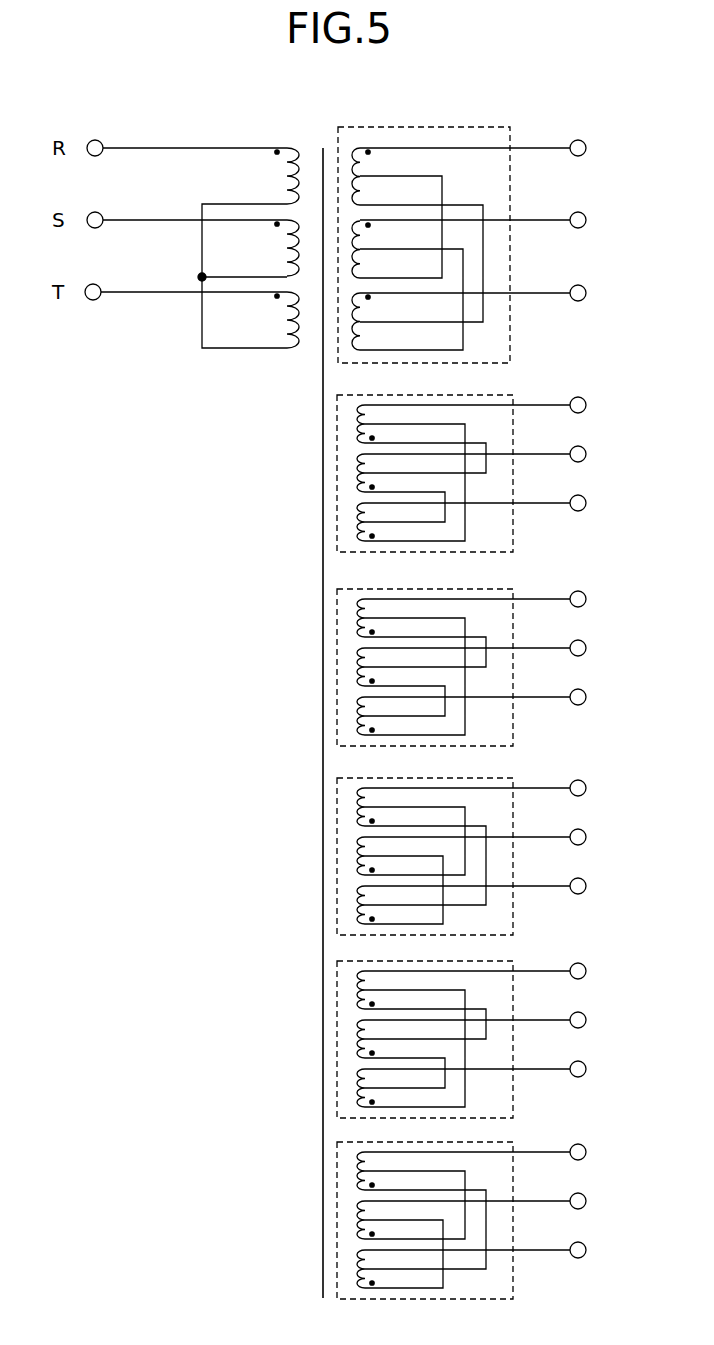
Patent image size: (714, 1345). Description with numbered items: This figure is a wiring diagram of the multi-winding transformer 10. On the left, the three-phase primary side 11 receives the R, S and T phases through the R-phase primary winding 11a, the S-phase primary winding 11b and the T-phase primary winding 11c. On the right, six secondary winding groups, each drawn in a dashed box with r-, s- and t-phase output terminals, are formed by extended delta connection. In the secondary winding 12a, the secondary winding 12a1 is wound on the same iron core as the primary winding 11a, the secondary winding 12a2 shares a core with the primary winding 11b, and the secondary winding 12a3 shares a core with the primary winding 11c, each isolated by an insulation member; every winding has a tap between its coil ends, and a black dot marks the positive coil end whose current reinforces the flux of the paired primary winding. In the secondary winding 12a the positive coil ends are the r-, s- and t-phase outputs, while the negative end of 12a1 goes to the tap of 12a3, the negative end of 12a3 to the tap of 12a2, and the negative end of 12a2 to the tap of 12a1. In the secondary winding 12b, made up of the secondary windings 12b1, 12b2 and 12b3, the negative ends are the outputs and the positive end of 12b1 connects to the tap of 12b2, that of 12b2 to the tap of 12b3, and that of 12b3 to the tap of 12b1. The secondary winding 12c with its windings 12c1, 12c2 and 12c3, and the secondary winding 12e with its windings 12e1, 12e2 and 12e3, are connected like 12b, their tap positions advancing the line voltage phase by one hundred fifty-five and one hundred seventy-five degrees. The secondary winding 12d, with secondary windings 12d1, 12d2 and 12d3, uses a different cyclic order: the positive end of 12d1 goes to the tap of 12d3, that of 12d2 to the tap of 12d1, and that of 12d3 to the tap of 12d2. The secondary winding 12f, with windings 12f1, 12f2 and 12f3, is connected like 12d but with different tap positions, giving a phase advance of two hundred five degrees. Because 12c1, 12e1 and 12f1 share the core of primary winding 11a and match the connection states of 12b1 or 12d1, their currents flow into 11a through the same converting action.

The multi-winding transformer 10 is at (427, 89).
The primary winding transformer 11 is at (274, 130).
The R-phase primary winding 11a is at (279, 180).
The S-phase primary winding 11b is at (279, 250).
The T-phase primary winding 11c is at (279, 320).
The secondary winding 12a is at (457, 127).
The secondary winding 12a1 is at (368, 167).
The secondary winding 12a2 is at (368, 240).
The secondary winding 12a3 is at (368, 310).
The secondary winding 12b is at (514, 395).
The secondary winding 12b1 is at (353, 422).
The secondary winding 12b2 is at (353, 469).
The secondary winding 12b3 is at (353, 517).
The secondary winding 12c is at (412, 650).
The secondary winding 12c1 is at (298, 612).
The secondary winding 12c2 is at (298, 660).
The secondary winding 12c3 is at (298, 707).
The secondary winding 12d is at (412, 839).
The secondary winding 12d1 is at (298, 801).
The secondary winding 12d2 is at (298, 849).
The secondary winding 12d3 is at (298, 896).
The secondary winding 12e is at (412, 1022).
The secondary winding 12e1 is at (298, 984).
The secondary winding 12e2 is at (298, 1032).
The secondary winding 12e3 is at (298, 1079).
The secondary winding 12f is at (412, 1203).
The secondary winding 12f1 is at (298, 1165).
The secondary winding 12f2 is at (298, 1213).
The secondary winding 12f3 is at (298, 1260).